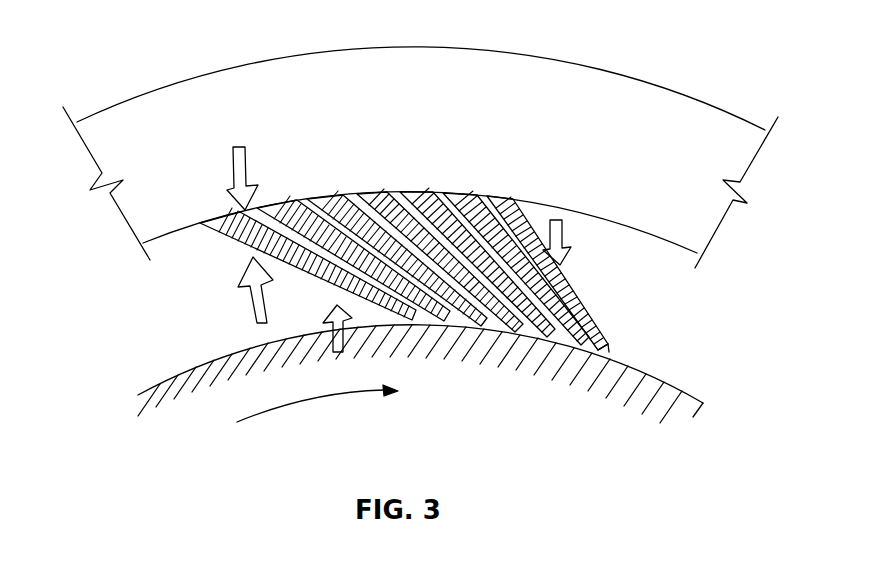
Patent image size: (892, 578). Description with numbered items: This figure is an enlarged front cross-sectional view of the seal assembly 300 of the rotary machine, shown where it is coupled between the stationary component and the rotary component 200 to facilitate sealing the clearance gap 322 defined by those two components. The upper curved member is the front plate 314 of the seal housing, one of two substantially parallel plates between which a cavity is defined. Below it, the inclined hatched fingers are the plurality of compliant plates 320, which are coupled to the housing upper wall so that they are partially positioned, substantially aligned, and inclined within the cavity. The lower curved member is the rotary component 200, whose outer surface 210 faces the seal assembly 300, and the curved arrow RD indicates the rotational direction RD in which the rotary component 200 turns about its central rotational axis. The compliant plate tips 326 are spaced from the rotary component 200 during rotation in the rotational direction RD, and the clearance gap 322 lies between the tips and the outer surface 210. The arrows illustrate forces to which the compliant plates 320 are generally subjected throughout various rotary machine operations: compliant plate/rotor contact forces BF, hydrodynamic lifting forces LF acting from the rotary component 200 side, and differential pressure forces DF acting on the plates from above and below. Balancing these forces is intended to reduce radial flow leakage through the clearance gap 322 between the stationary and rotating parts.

The seal assembly 300 is at (150, 45).
The front plate 314 is at (437, 134).
The compliant plates 320 is at (512, 208).
The clearance gap 322 is at (616, 351).
The compliant plate tips 326 is at (610, 350).
The outer surface 210 is at (684, 393).
The rotary component 200 is at (668, 413).
The differential pressure forces DF is at (233, 168).
The compliant plate/rotor contact forces BF is at (563, 232).
The hydrodynamic lifting forces LF is at (345, 340).
The rotational direction RD is at (285, 406).